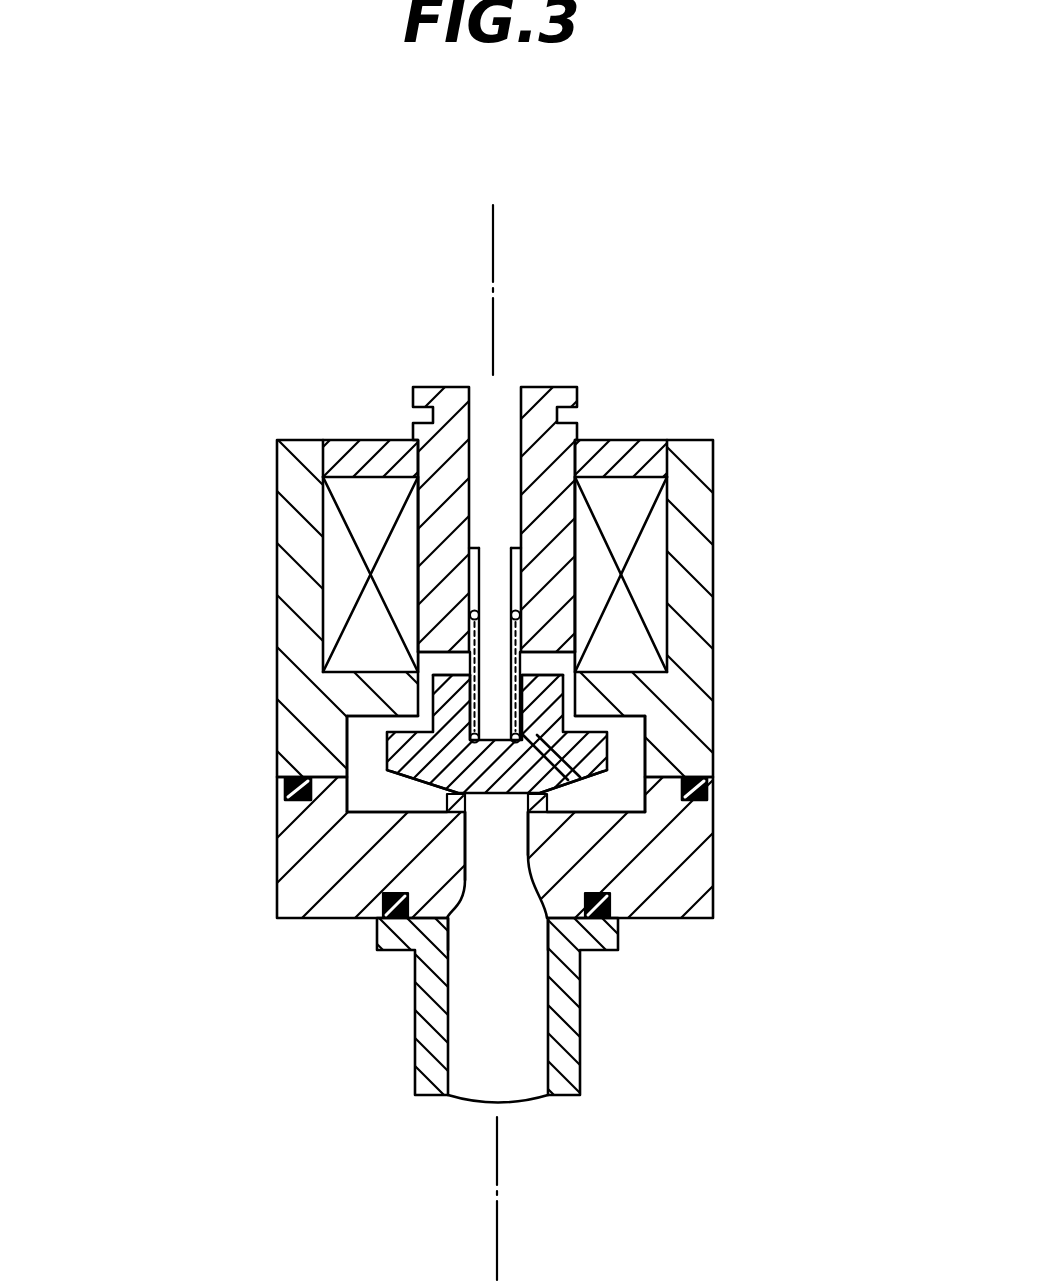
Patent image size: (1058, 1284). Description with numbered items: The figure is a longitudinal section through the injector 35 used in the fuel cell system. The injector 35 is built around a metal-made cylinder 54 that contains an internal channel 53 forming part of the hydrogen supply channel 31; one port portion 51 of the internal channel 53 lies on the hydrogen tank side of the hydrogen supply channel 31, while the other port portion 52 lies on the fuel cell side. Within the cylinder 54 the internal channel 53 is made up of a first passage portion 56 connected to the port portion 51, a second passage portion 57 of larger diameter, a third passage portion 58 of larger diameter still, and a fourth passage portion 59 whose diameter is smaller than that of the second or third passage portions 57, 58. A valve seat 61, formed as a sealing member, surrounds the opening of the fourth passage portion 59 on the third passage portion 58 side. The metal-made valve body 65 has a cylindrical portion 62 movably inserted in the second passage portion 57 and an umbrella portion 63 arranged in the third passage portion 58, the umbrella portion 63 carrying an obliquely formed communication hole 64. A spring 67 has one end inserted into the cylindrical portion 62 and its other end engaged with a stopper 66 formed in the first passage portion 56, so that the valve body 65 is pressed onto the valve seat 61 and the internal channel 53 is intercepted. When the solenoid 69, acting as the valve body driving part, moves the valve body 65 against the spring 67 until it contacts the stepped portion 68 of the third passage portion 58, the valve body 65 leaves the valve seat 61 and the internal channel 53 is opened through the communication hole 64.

The hydrogen supply channel 31 is at (494, 256).
The injector 35 is at (807, 397).
The port portion 51 is at (468, 387).
The port portion 52 is at (448, 950).
The internal channel 53 is at (413, 918).
The cylinder 54 is at (713, 643).
The first passage portion 56 is at (517, 447).
The second passage portion 57 is at (480, 748).
The third passage portion 58 is at (363, 750).
The fourth passage portion 59 is at (473, 840).
The valve seat 61 is at (610, 808).
The cylindrical portion 62 is at (560, 697).
The umbrella portion 63 is at (580, 748).
The communication hole 64 is at (530, 798).
The valve body 65 is at (410, 790).
The stopper 66 is at (522, 580).
The spring 67 is at (468, 663).
The stepped portion 68 is at (347, 717).
The solenoid 69 is at (627, 507).